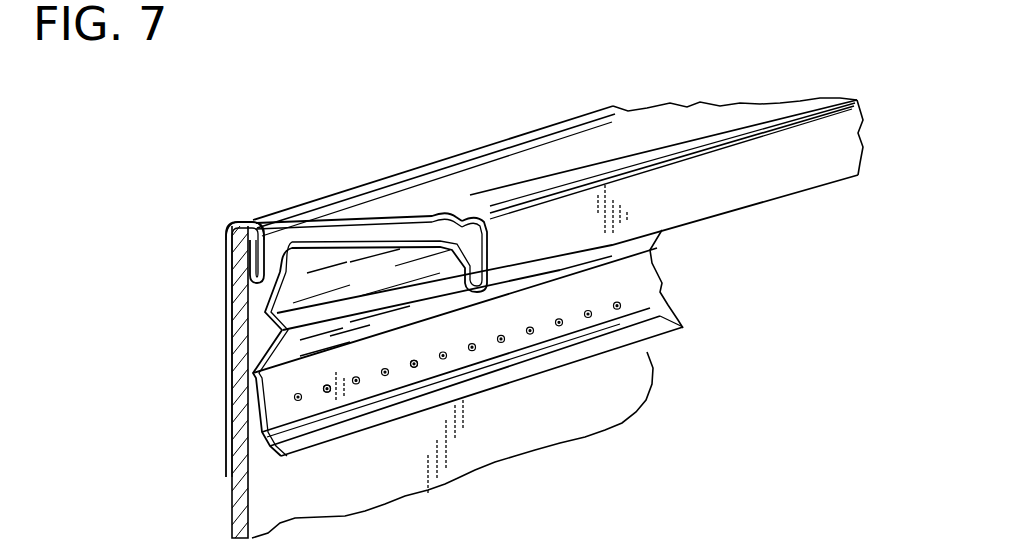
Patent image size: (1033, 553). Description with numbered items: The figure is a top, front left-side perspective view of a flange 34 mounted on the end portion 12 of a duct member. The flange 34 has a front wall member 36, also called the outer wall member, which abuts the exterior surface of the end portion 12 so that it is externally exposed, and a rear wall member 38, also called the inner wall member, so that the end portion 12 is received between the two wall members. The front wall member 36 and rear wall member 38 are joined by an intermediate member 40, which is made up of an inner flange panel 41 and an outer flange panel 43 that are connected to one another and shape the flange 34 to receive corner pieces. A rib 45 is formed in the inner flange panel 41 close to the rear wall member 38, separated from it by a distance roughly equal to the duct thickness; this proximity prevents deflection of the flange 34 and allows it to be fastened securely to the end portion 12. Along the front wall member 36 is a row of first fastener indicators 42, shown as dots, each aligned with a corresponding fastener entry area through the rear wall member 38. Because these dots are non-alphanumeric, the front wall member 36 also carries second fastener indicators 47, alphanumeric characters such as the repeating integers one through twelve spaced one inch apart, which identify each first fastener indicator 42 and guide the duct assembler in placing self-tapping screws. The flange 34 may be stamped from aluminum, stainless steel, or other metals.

The end portion 12 is at (232, 498).
The flange 34 is at (760, 231).
The front wall member 36 is at (645, 279).
The rear wall member 38 is at (227, 268).
The intermediate member 40 is at (884, 146).
The inner flange panel 41 is at (367, 222).
The first fastener indicators 42 is at (340, 440).
The outer flange panel 43 is at (413, 247).
The rib 45 is at (240, 219).
The second fastener indicators 47 is at (428, 362).